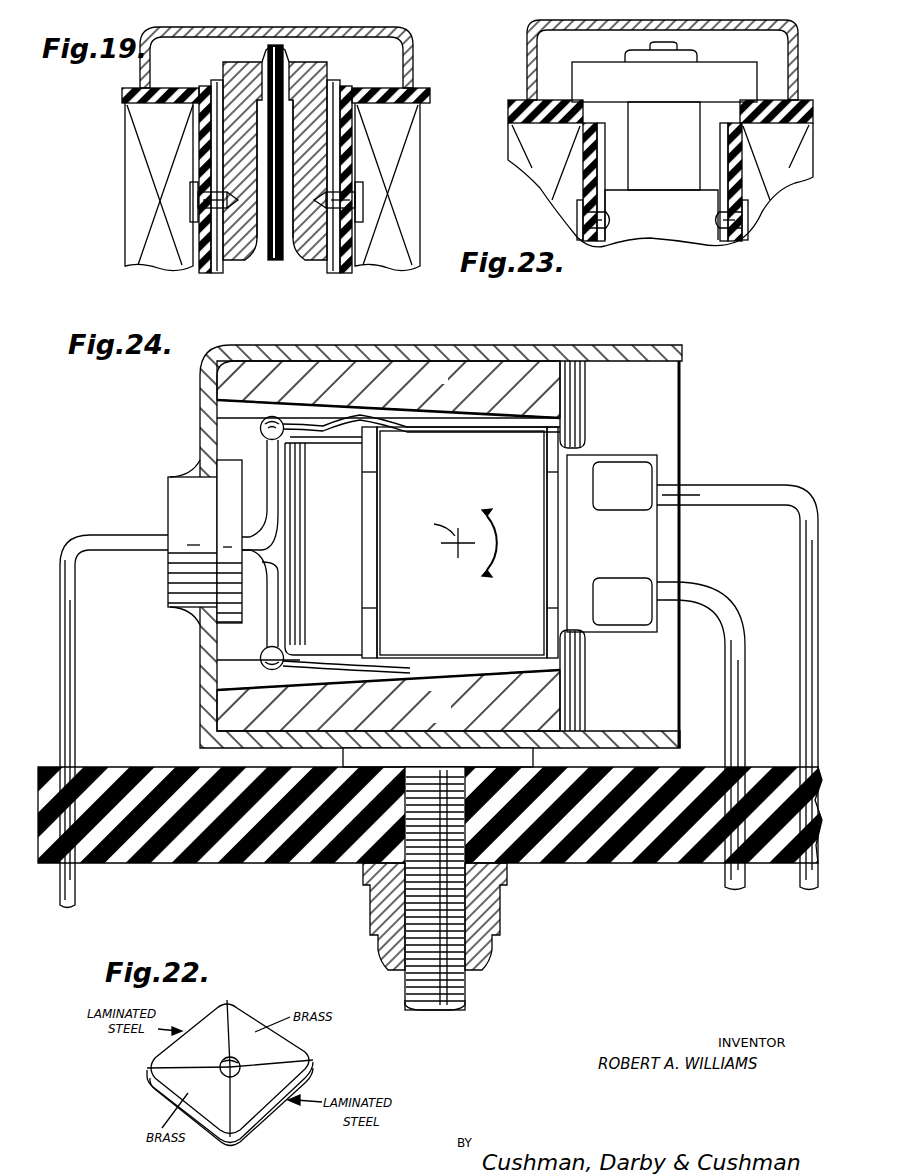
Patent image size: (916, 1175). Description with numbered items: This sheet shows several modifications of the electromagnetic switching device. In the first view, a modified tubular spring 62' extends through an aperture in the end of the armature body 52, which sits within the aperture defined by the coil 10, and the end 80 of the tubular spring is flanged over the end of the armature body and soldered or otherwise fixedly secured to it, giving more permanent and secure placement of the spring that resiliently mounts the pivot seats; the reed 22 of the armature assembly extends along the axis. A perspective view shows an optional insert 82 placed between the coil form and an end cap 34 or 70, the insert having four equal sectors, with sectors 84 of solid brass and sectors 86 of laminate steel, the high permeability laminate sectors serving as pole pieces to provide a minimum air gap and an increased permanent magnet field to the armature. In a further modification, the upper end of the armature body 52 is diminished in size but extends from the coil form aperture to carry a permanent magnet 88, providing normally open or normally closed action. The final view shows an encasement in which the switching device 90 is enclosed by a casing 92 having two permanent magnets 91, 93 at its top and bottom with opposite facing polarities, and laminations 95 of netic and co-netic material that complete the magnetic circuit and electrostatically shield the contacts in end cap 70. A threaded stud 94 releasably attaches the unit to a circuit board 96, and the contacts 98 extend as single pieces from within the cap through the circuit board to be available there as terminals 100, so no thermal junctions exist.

In FIG. 19, the coil 10 is at (172, 158).
In FIG. 23, the coil 10 is at (558, 163).
In FIG. 19, the reed 22 is at (262, 254).
In FIG. 23, the end cap 34 is at (799, 64).
In FIG. 19, the armature body 52 is at (330, 74).
In FIG. 23, the armature body 52 is at (673, 172).
In FIG. 19, the tubular spring 62' is at (327, 169).
In FIG. 24, the end cap 70 is at (610, 455).
In FIG. 19, the flanged end of tubular spring 80 is at (252, 58).
In FIG. 22, the insert 82 is at (325, 1057).
In FIG. 22, the solid brass sector 84 is at (252, 1019).
In FIG. 22, the laminate steel sector 86 is at (185, 1028).
In FIG. 23, the permanent magnet 88 is at (717, 67).
In FIG. 24, the switching device 90 is at (457, 609).
In FIG. 24, the permanent magnet 91 is at (350, 368).
In FIG. 24, the casing 92 is at (430, 345).
In FIG. 24, the permanent magnet 93 is at (330, 707).
In FIG. 24, the threaded stud 94 is at (466, 989).
In FIG. 24, the laminations 95 is at (587, 398).
In FIG. 24, the circuit board 96 is at (607, 864).
In FIG. 24, the contacts 98 is at (728, 510).
In FIG. 24, the terminals 100 is at (800, 890).